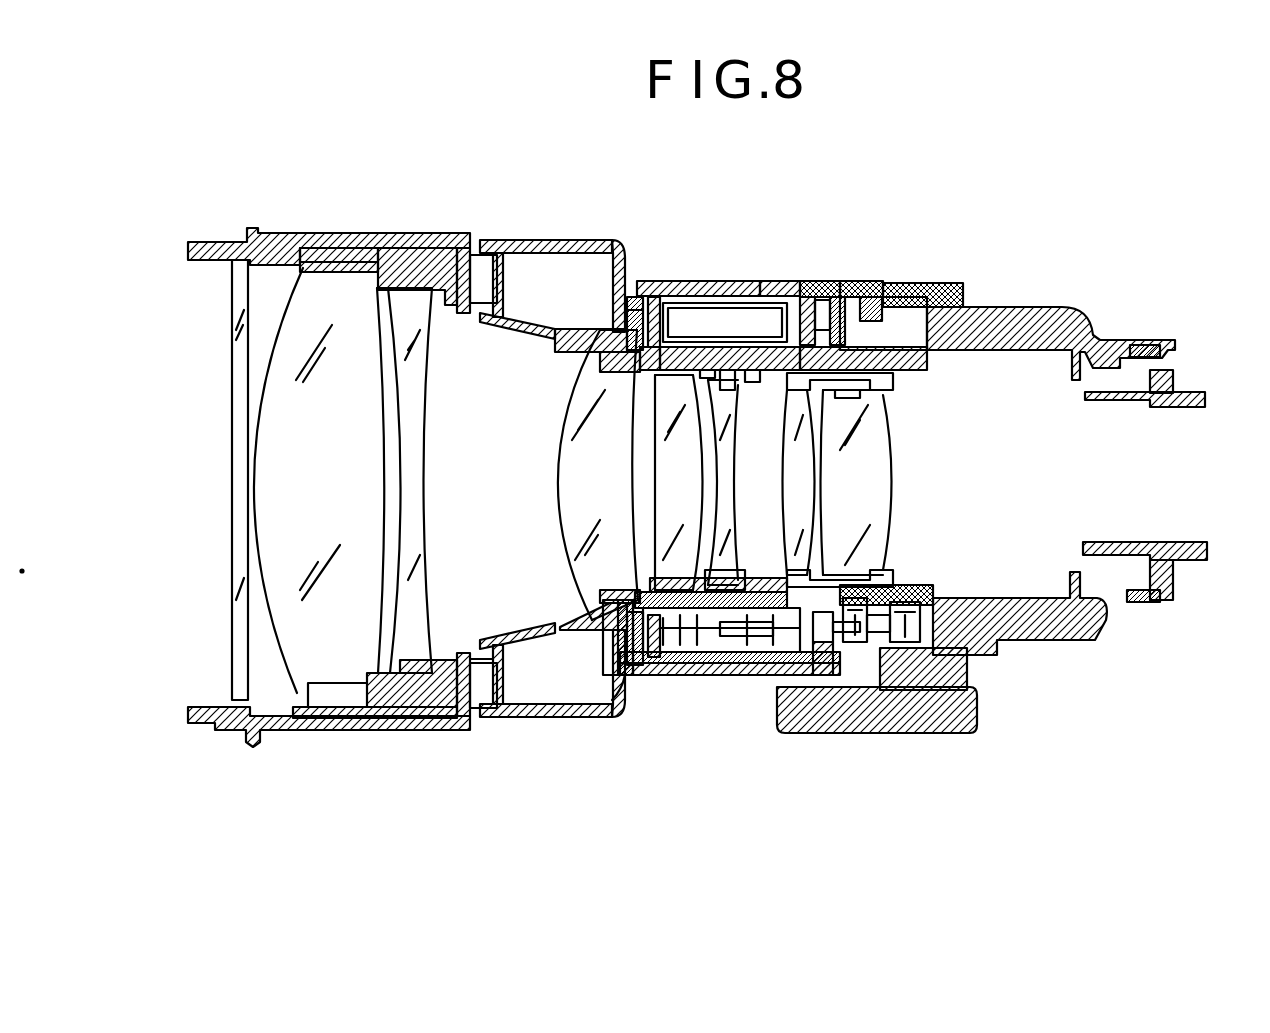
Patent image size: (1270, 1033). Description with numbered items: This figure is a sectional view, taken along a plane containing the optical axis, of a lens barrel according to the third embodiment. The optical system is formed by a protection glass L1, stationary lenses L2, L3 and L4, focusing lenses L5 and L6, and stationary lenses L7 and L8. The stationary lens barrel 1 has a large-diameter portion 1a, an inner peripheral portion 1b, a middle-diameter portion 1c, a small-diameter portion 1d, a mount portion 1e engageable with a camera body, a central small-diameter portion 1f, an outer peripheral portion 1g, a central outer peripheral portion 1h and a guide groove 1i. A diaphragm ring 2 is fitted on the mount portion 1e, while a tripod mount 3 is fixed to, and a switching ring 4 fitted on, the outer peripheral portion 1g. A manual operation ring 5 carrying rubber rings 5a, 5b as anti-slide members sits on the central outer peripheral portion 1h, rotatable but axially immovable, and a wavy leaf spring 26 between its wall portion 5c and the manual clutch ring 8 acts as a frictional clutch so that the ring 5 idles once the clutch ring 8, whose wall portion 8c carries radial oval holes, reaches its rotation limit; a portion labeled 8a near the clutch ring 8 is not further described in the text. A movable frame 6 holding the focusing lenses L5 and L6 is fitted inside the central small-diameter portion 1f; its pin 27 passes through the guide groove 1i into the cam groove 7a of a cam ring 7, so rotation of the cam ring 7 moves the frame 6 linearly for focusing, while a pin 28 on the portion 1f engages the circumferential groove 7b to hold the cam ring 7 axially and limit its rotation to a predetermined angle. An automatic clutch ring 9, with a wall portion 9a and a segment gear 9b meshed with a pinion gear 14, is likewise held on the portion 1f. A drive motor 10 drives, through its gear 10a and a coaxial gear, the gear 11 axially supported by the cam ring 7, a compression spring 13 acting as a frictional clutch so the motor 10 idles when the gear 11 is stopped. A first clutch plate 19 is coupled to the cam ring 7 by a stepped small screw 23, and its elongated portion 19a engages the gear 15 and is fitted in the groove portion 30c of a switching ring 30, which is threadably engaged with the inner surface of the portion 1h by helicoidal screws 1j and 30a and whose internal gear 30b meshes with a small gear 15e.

The stationary lens barrel 1 is at (447, 235).
The large-diameter portion 1a is at (367, 258).
The inner peripheral portion 1b is at (370, 266).
The middle-diameter portion 1c is at (498, 280).
The small-diameter portion 1d is at (850, 385).
The mount portion 1e is at (1190, 392).
The central small-diameter portion 1f is at (848, 398).
The outer peripheral portion 1g is at (1010, 310).
The central outer peripheral portion 1h is at (823, 283).
The guide groove 1i is at (752, 382).
The helicoidal screw 1j is at (848, 690).
The diaphragm ring 2 is at (1141, 346).
The tripod mount 3 is at (980, 284).
The switching ring 4 is at (883, 323).
The manual operation ring 5 is at (600, 245).
The rubber ring 5a is at (683, 281).
The rubber ring 5b is at (517, 240).
The wall portion 5c is at (617, 258).
The movable frame 6 is at (633, 410).
The cam ring 7 is at (713, 278).
The cam groove 7a is at (772, 283).
The circumferential groove 7b is at (722, 570).
The manual clutch ring 8 is at (625, 312).
The projection of ring 8a is at (648, 300).
The wall portion 8c is at (627, 333).
The automatic clutch ring 9 is at (845, 285).
The wall portion 9a is at (847, 283).
The segment gear 9b is at (920, 285).
The drive motor 10 is at (862, 690).
The gear 10a is at (895, 690).
The gear 11 is at (920, 690).
The compression spring 13 is at (912, 700).
The pinion gear 14 is at (870, 283).
The gear 15 is at (875, 655).
The small gear 15e is at (825, 690).
The first clutch plate 19 is at (772, 283).
The elongated portion 19a is at (675, 322).
The stepped small screw 23 is at (753, 327).
The wavy leaf spring 26 is at (637, 278).
The pin 27 is at (724, 390).
The pin 28 is at (633, 383).
The switching ring 30 is at (706, 675).
The helicoidal screw 30a is at (785, 680).
The internal gear 30b is at (873, 283).
The groove portion 30c is at (660, 680).
The protection glass L1 is at (232, 480).
The stationary lens L2 is at (262, 548).
The stationary lens L3 is at (423, 480).
The stationary lens L4 is at (567, 468).
The focusing lens L5 is at (657, 520).
The focusing lens L6 is at (727, 558).
The stationary lens L7 is at (795, 532).
The stationary lens L8 is at (883, 488).